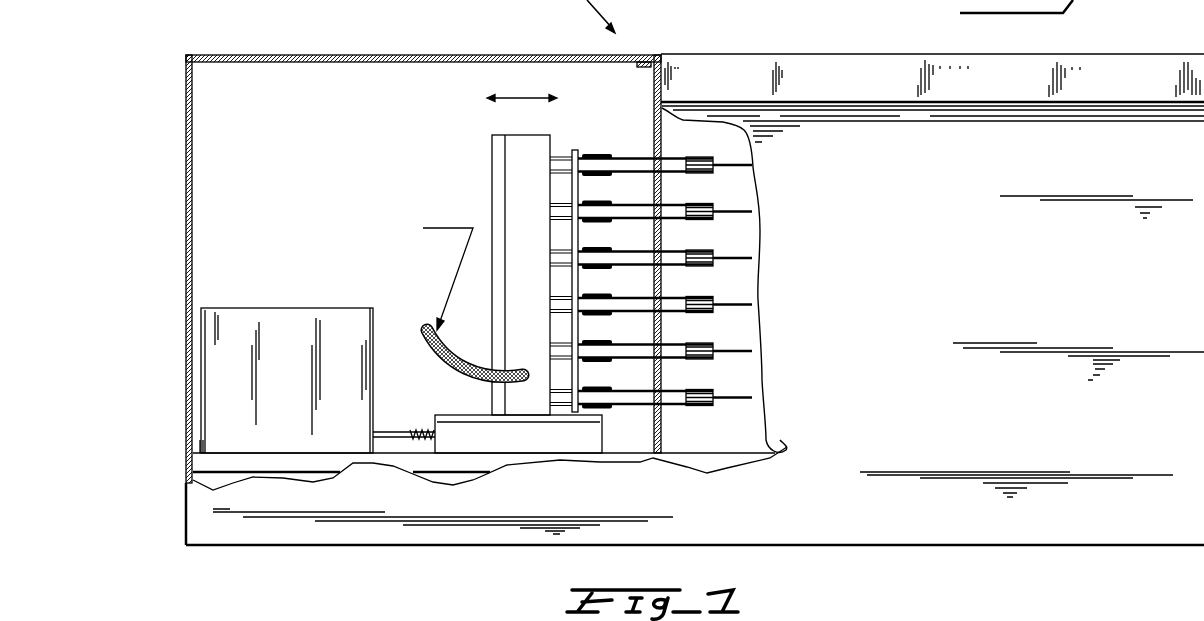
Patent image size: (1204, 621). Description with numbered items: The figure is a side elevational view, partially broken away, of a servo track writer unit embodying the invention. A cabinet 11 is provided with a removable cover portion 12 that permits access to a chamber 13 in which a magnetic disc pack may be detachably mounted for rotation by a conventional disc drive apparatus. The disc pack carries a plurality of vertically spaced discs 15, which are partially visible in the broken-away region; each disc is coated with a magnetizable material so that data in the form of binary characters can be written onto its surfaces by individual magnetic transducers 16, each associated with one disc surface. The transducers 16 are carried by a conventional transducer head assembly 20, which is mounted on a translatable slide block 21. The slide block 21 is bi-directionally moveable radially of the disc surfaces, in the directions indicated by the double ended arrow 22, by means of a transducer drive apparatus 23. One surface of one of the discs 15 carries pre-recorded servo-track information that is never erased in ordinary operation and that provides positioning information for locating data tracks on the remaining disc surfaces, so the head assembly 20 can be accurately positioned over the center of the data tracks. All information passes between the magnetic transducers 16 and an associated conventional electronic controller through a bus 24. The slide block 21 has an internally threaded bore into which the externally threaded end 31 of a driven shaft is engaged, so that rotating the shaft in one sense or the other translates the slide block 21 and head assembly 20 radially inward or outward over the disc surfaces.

The cabinet 11 is at (343, 53).
The removable cover portion 12 is at (858, 67).
The chamber 13 is at (720, 151).
The discs 15 is at (740, 211).
The magnetic transducers 16 is at (702, 208).
The transducer head assembly 20 is at (600, 147).
The slide block 21 is at (460, 422).
The double ended arrow 22 is at (520, 98).
The transducer drive apparatus 23 is at (270, 300).
The bus 24 is at (427, 350).
The externally threaded end 31 is at (420, 430).